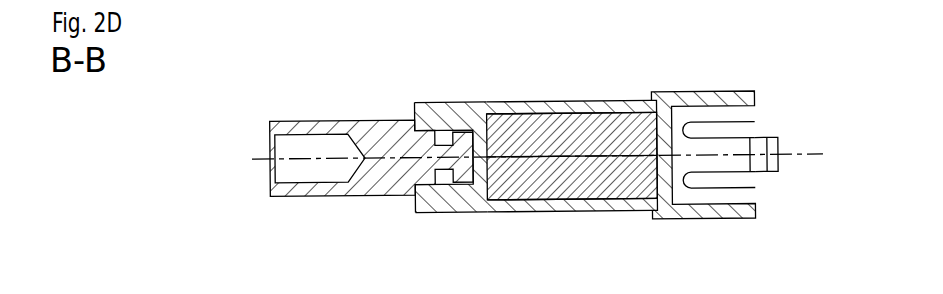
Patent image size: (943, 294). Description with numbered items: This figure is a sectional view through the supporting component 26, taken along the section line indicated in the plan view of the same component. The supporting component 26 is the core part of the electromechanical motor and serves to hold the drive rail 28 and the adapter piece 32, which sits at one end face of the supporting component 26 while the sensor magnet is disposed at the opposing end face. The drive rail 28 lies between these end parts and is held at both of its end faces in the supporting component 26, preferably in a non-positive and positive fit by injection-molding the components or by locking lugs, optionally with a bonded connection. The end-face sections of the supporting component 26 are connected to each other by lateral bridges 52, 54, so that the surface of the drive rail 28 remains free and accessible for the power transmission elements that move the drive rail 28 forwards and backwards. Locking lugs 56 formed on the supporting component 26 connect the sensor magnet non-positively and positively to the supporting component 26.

The supporting component 26 is at (435, 100).
The drive rail 28 is at (525, 130).
The adapter piece 32 is at (293, 145).
The lateral bridge 52 is at (588, 107).
The lateral bridge 54 is at (530, 207).
The locking lugs 56 is at (762, 165).